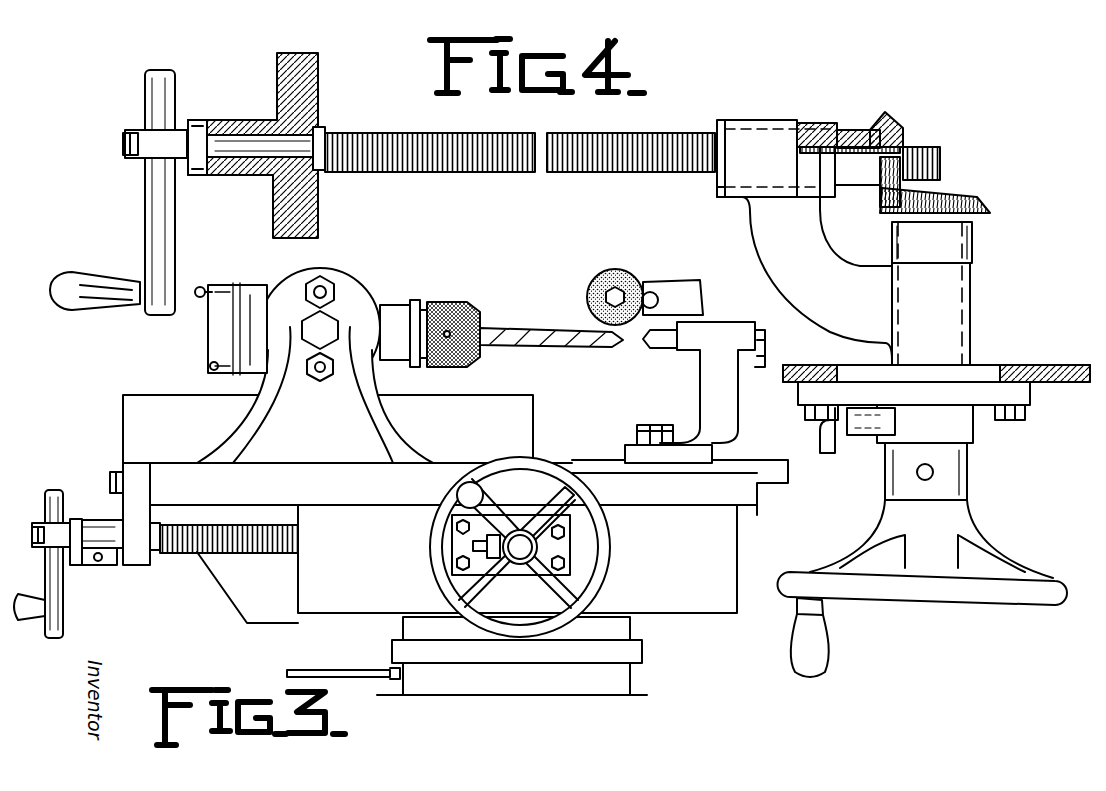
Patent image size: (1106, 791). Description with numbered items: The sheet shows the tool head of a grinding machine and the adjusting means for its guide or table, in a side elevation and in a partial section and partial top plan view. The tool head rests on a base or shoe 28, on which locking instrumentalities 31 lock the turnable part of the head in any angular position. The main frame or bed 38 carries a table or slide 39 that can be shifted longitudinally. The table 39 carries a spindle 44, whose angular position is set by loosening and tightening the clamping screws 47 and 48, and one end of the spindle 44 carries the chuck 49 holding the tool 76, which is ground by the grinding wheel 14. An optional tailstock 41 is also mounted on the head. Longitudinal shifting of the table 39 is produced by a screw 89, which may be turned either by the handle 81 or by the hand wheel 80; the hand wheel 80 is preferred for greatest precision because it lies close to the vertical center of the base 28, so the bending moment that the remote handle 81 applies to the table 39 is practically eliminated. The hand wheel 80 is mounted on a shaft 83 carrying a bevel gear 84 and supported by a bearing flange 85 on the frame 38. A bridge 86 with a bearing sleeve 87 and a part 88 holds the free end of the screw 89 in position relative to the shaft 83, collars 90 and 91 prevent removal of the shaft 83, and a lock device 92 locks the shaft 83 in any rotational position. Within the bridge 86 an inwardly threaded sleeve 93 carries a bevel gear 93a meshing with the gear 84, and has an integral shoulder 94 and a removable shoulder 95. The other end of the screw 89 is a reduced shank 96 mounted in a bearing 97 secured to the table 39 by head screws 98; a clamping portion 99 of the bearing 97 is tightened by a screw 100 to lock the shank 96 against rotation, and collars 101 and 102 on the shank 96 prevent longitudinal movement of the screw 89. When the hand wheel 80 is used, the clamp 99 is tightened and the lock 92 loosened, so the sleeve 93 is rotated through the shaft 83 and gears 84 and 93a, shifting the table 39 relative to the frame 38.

In FIG. 3, the grinding wheel 14 is at (587, 300).
In FIG. 3, the base or shoe 28 is at (518, 695).
In FIG. 3, the locking instrumentalities 31 is at (330, 670).
In FIG. 4, the main frame or bed 38 is at (1035, 375).
In FIG. 3, the main frame or bed 38 is at (702, 627).
In FIG. 3, the table or slide 39 is at (375, 505).
In FIG. 3, the tailstock 41 is at (683, 356).
In FIG. 3, the spindle 44 is at (386, 305).
In FIG. 3, the clamping screw 47 is at (336, 280).
In FIG. 3, the clamping screw 48 is at (320, 381).
In FIG. 3, the chuck 49 is at (458, 302).
In FIG. 3, the tool 76 is at (530, 347).
In FIG. 4, the hand wheel 80 is at (922, 605).
In FIG. 3, the hand wheel 80 is at (612, 556).
In FIG. 4, the handle or crank member 81 is at (168, 255).
In FIG. 3, the handle or crank member 81 is at (62, 615).
In FIG. 4, the shaft 83 is at (975, 328).
In FIG. 4, the bevel gear 84 is at (985, 203).
In FIG. 4, the bearing flange 85 is at (978, 438).
In FIG. 3, the bearing flange 85 is at (558, 545).
In FIG. 4, the bridge 86 is at (757, 253).
In FIG. 4, the bearing sleeve 87 is at (950, 300).
In FIG. 4, the part 88 is at (766, 135).
In FIG. 4, the screw 89 is at (476, 134).
In FIG. 4, the collar 90 is at (968, 490).
In FIG. 4, the collar 91 is at (960, 247).
In FIG. 4, the lock device 92 is at (840, 455).
In FIG. 3, the lock device 92 is at (480, 547).
In FIG. 4, the inwardly threaded sleeve 93 is at (817, 123).
In FIG. 4, the bevel gear 93a is at (895, 120).
In FIG. 4, the integral shoulder 94 is at (850, 130).
In FIG. 4, the removable shoulder 95 is at (717, 197).
In FIG. 4, the reduced shank 96 is at (243, 135).
In FIG. 4, the bearing 97 is at (318, 105).
In FIG. 3, the bearing 97 is at (140, 565).
In FIG. 3, the head screw 98 is at (110, 478).
In FIG. 4, the clamping portion 99 is at (213, 120).
In FIG. 3, the clamping portion 99 is at (95, 520).
In FIG. 3, the screw 100 is at (102, 565).
In FIG. 4, the collar 101 is at (326, 168).
In FIG. 3, the collar 101 is at (158, 522).
In FIG. 4, the collar 102 is at (198, 176).
In FIG. 3, the collar 102 is at (80, 566).